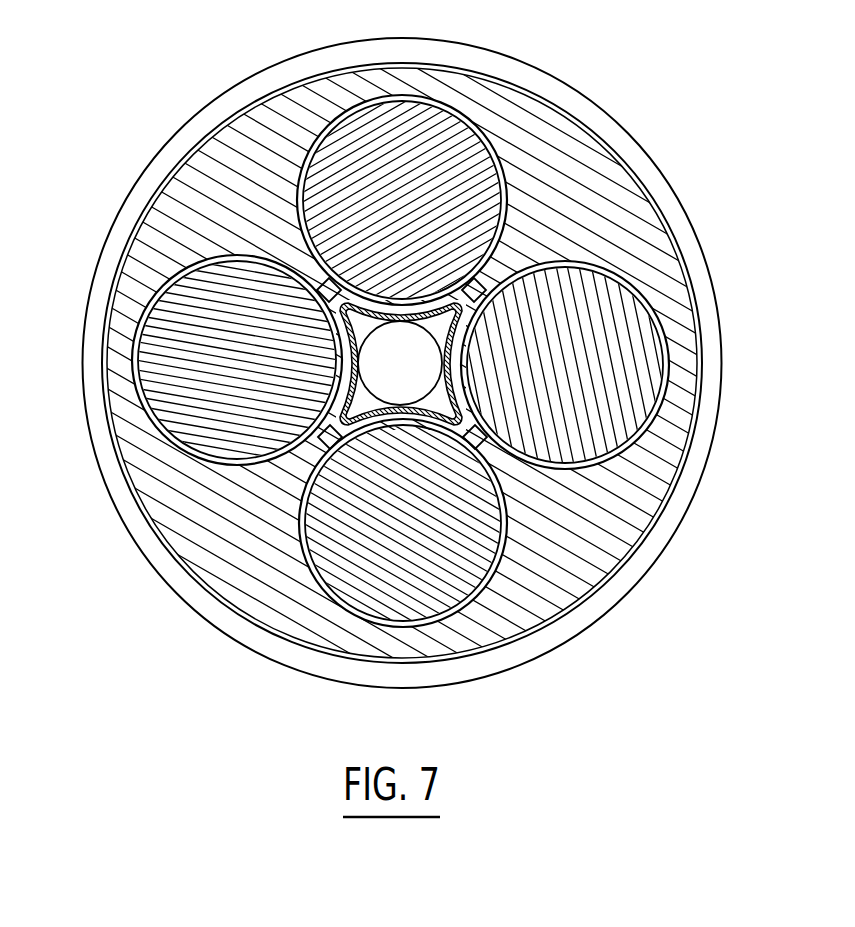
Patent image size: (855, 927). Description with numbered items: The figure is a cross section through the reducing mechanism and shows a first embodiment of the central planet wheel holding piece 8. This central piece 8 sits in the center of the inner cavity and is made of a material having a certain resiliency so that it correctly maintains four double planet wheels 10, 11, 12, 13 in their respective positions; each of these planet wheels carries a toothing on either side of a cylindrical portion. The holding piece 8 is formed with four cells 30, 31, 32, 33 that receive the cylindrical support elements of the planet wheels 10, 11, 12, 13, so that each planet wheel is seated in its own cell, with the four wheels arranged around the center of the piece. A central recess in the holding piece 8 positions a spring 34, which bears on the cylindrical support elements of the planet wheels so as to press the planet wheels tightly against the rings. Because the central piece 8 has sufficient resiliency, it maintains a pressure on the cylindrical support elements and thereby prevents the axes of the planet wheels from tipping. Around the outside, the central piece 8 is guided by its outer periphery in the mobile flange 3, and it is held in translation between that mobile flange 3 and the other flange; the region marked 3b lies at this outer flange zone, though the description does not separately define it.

The mobile flange 3 is at (522, 77).
The inner sheath layer 3b is at (595, 203).
The central planet wheel holding piece 8 is at (572, 510).
The double planet wheel 10 is at (157, 312).
The double planet wheel 11 is at (358, 138).
The double planet wheel 12 is at (645, 373).
The double planet wheel 13 is at (447, 610).
The cell 30 is at (117, 372).
The cell 31 is at (447, 110).
The cell 32 is at (668, 340).
The cell 33 is at (347, 618).
The spring 34 is at (360, 358).